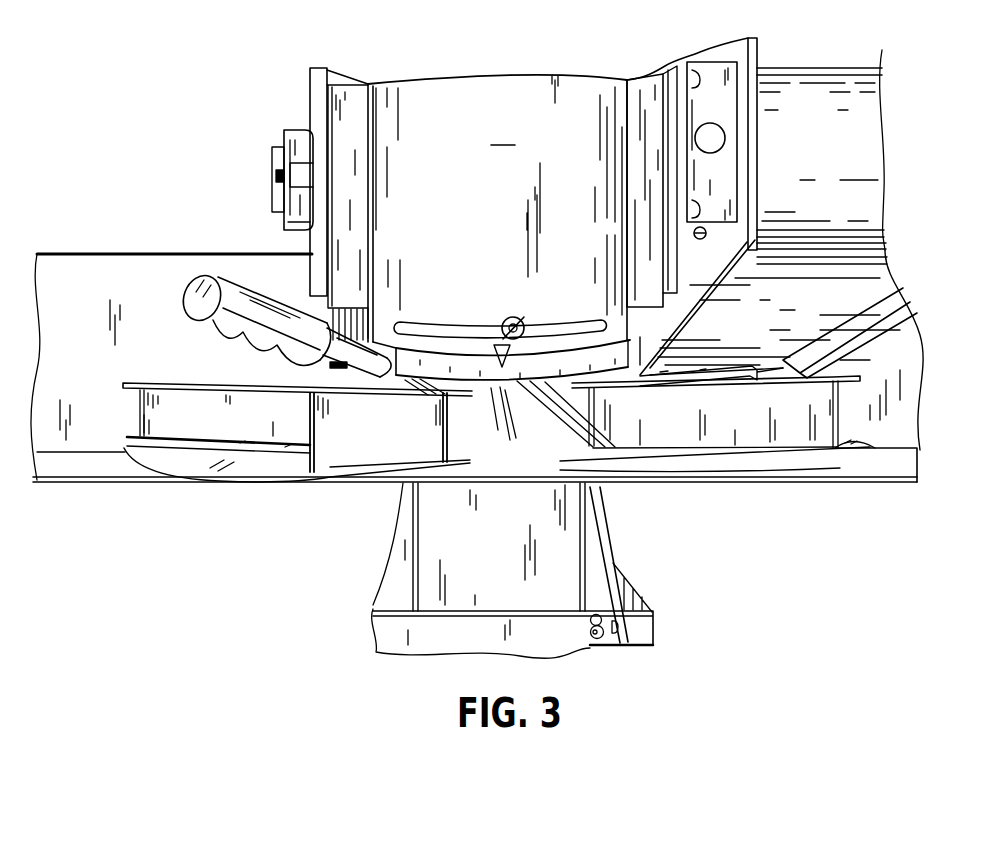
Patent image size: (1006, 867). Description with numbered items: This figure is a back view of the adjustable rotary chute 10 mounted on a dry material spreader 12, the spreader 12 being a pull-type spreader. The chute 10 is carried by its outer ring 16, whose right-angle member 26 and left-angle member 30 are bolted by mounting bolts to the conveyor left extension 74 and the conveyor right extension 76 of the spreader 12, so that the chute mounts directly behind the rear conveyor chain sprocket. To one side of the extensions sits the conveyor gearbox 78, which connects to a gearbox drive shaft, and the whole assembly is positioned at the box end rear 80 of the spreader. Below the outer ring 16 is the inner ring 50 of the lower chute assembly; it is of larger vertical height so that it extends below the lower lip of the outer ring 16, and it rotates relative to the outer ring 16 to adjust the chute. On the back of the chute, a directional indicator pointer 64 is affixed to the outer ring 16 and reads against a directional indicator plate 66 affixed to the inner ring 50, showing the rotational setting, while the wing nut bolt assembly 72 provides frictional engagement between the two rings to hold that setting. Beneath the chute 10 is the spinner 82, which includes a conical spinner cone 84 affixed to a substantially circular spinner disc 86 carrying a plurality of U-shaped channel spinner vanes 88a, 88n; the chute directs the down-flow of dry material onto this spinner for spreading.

The adjustable rotary chute 10 is at (497, 208).
The dry material spreader 12 is at (242, 123).
The outer ring 16 is at (425, 348).
The right-angle member 26 is at (357, 107).
The left-angle member 30 is at (647, 93).
The inner ring 50 is at (393, 377).
The directional indicator pointer 64 is at (507, 358).
The directional indicator plate 66 is at (597, 363).
The wing nut bolt assembly 72 is at (507, 321).
The conveyor left extension 74 is at (315, 204).
The conveyor right extension 76 is at (680, 175).
The conveyor gearbox 78 is at (863, 140).
The box end rear 80 is at (877, 347).
The spinner 82 is at (884, 440).
The conical spinner cone 84 is at (558, 437).
The spinner disc 86 is at (877, 472).
The spinner vane 88a is at (273, 450).
The spinner vane 88n is at (750, 378).